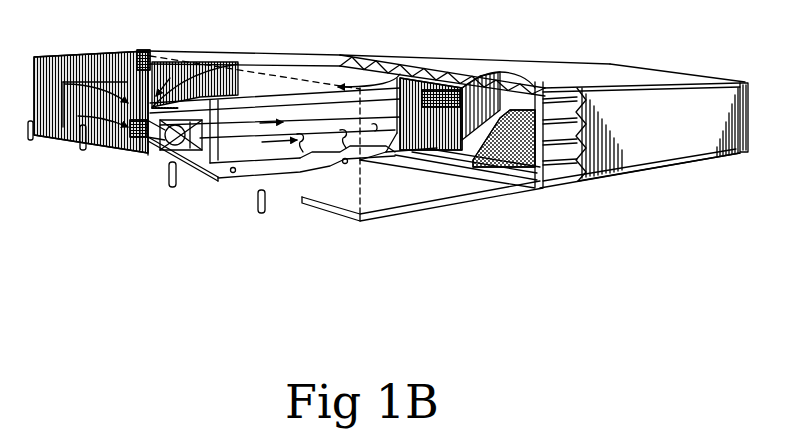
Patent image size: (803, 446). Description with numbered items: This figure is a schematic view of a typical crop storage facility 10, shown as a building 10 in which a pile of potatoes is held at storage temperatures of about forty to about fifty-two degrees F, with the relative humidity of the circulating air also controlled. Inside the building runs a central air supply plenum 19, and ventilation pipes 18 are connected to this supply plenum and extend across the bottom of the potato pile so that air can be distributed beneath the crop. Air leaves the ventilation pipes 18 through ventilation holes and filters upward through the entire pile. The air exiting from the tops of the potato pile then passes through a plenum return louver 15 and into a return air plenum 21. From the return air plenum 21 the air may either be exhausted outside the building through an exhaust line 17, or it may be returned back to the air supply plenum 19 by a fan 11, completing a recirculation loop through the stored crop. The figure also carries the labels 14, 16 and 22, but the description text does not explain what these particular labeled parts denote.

The crop storage facility 10 is at (504, 62).
The fan 11 is at (166, 148).
The inlet grille 14 is at (133, 137).
The plenum return louver 15 is at (440, 88).
The upper air duct 16 is at (158, 111).
The exhaust line 17 is at (140, 50).
The ventilation pipes 18 is at (455, 163).
The central air supply plenum 19 is at (306, 158).
The return air plenum 21 is at (268, 78).
The pellet storage 22 is at (519, 163).